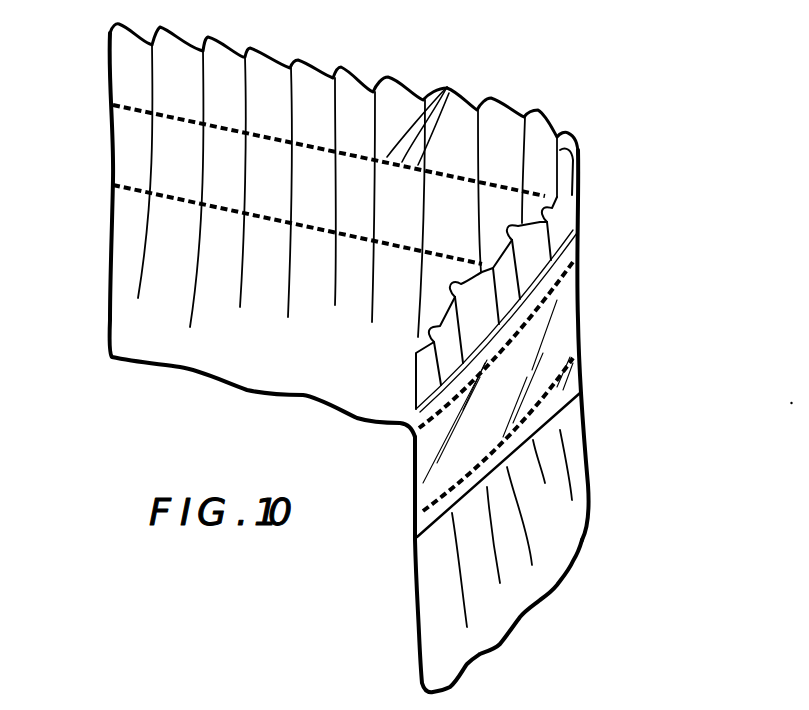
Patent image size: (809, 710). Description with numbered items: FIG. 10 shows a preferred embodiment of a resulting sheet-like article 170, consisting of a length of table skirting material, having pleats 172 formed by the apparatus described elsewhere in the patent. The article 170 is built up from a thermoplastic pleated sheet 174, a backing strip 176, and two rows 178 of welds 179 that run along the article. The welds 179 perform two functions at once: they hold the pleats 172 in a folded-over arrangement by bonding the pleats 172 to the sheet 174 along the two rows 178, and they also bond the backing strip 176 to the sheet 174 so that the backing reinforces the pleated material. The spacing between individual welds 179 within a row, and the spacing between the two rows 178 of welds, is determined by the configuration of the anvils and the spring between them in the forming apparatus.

The sheet-like article 170 is at (582, 66).
The pleats 172 is at (538, 241).
The thermoplastic pleated sheet 174 is at (579, 492).
The backing strip 176 is at (573, 368).
The rows 178 is at (158, 124).
The welds 179 is at (448, 86).